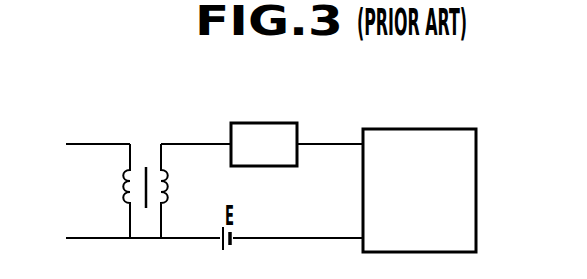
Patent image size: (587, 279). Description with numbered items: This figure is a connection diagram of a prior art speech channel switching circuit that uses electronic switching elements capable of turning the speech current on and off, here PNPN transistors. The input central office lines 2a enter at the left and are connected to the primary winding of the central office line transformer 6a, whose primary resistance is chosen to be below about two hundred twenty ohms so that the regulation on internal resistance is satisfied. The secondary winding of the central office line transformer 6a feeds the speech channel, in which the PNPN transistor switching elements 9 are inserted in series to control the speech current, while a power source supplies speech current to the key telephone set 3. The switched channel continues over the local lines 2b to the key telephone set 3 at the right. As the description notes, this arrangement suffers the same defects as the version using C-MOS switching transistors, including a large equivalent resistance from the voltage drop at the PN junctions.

The central office lines 2a is at (72, 245).
The central office line transformer 6a is at (146, 164).
The PNPN transistor switching elements 9 is at (267, 122).
The local lines 2b is at (322, 245).
The key telephone set 3 is at (444, 128).